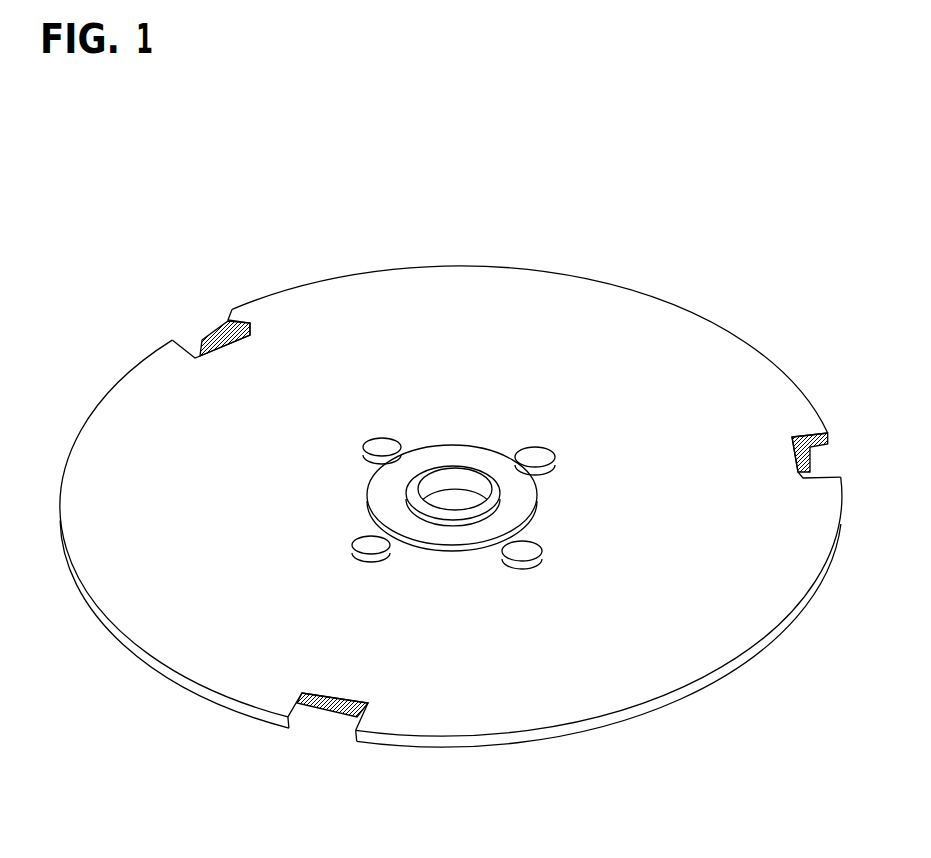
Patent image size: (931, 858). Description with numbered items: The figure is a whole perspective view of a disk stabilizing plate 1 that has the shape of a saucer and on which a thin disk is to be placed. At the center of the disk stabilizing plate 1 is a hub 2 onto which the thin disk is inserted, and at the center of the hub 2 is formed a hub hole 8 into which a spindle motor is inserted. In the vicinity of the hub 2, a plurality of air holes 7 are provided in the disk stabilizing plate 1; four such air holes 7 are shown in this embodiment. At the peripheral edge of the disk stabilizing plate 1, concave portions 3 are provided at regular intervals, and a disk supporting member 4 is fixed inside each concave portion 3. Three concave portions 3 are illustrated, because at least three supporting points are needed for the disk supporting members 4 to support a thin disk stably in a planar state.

The disk stabilizing plate 1 is at (132, 413).
The hub 2 is at (462, 447).
The concave portion 3 is at (197, 330).
The disk supporting member 4 is at (228, 320).
The air hole 7 is at (530, 446).
The hub hole 8 is at (448, 480).